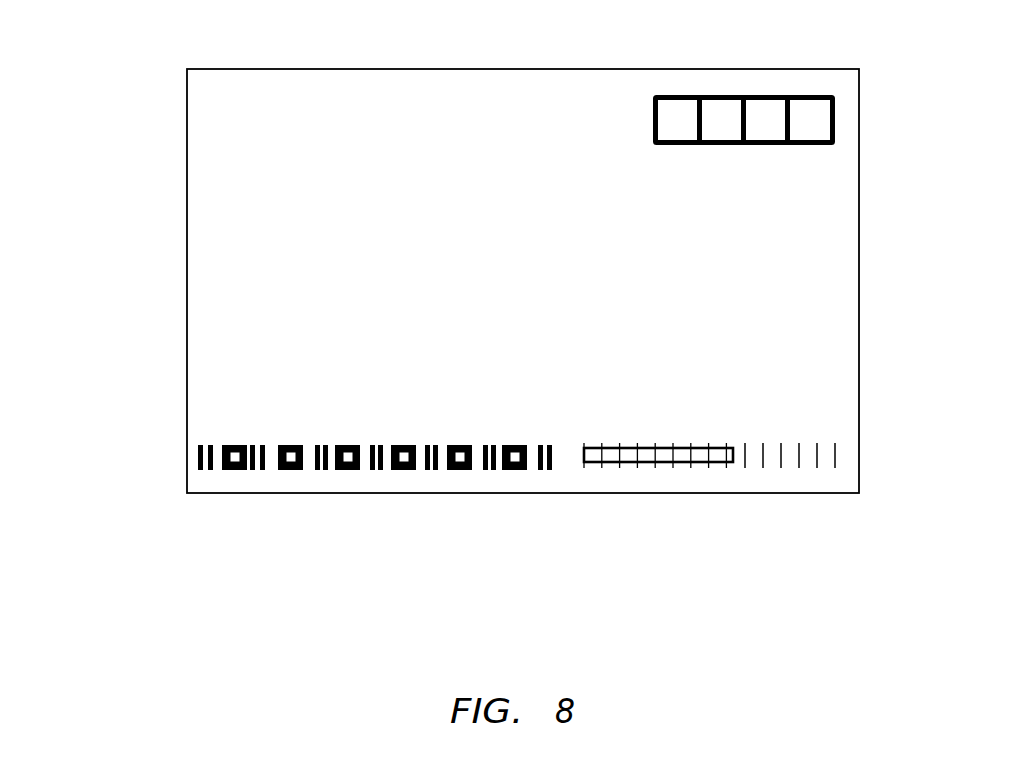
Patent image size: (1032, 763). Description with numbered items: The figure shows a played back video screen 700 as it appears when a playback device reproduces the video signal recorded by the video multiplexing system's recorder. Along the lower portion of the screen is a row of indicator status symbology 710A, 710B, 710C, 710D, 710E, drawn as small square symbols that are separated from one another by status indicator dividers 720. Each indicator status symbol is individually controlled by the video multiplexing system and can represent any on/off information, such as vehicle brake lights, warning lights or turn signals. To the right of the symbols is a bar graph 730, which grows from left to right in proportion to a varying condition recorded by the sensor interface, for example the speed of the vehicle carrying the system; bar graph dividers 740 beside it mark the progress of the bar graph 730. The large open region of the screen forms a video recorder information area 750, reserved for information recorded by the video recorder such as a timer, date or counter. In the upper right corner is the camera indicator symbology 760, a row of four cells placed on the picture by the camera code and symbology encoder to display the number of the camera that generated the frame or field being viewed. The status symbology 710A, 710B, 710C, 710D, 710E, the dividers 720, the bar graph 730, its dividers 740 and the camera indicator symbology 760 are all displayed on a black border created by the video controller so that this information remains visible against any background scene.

The played back video screen 700 is at (173, 300).
The indicator status symbology 710A is at (228, 470).
The indicator status symbology 710B is at (287, 470).
The indicator status symbology 710C is at (347, 470).
The indicator status symbology 710D is at (402, 470).
The indicator status symbology 710E is at (517, 470).
The status indicator divider 720 is at (258, 445).
The bar graph 730 is at (635, 466).
The bar graph dividers 740 is at (762, 466).
The video recorder information area 750 is at (375, 82).
The camera indicator symbology 760 is at (837, 117).